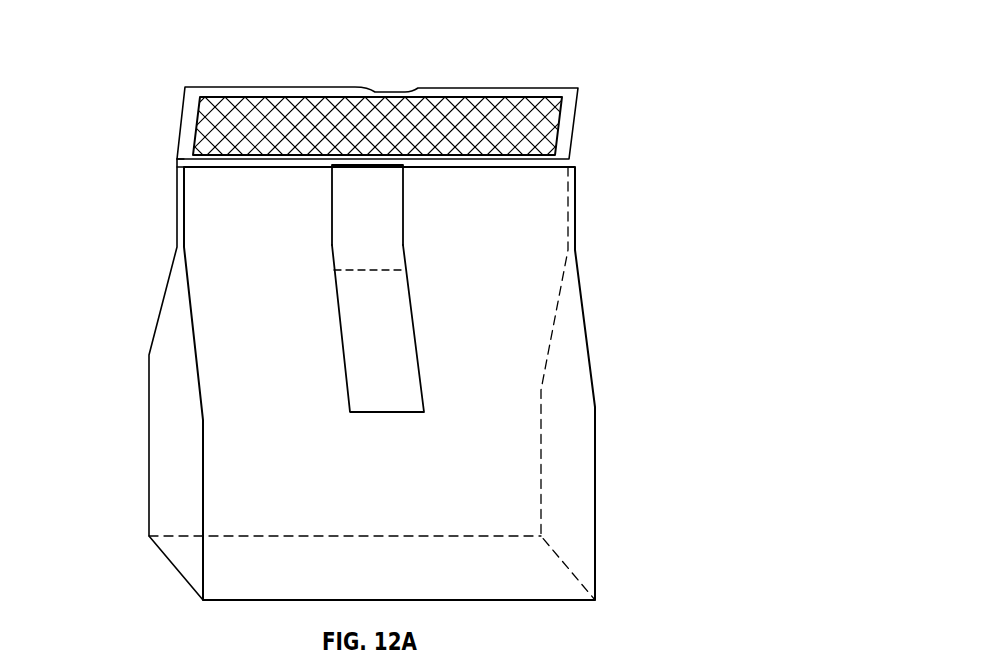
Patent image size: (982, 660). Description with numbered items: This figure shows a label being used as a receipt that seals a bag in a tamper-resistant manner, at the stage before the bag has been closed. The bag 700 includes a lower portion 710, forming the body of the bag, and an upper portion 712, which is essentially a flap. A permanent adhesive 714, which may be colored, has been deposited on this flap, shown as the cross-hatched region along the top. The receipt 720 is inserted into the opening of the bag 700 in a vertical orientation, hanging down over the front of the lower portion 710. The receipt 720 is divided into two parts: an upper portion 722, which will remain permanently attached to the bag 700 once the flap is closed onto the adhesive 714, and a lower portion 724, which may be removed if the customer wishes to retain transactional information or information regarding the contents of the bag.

The bag 700 is at (391, 313).
The lower portion 710 is at (568, 467).
The upper portion 712 is at (398, 93).
The adhesive 714 is at (518, 107).
The receipt 720 is at (243, 288).
The upper portion 722 is at (343, 225).
The lower portion 724 is at (355, 348).